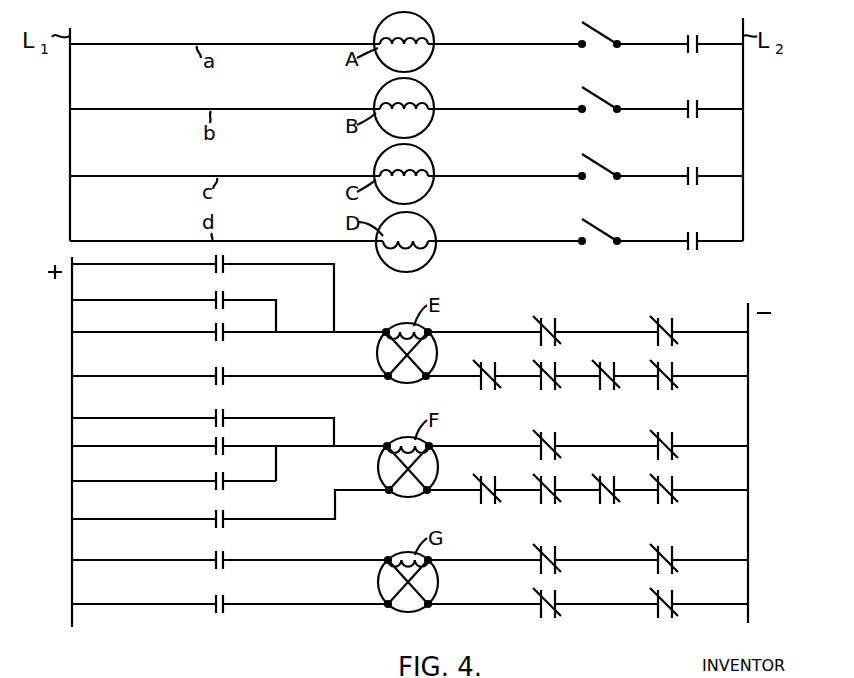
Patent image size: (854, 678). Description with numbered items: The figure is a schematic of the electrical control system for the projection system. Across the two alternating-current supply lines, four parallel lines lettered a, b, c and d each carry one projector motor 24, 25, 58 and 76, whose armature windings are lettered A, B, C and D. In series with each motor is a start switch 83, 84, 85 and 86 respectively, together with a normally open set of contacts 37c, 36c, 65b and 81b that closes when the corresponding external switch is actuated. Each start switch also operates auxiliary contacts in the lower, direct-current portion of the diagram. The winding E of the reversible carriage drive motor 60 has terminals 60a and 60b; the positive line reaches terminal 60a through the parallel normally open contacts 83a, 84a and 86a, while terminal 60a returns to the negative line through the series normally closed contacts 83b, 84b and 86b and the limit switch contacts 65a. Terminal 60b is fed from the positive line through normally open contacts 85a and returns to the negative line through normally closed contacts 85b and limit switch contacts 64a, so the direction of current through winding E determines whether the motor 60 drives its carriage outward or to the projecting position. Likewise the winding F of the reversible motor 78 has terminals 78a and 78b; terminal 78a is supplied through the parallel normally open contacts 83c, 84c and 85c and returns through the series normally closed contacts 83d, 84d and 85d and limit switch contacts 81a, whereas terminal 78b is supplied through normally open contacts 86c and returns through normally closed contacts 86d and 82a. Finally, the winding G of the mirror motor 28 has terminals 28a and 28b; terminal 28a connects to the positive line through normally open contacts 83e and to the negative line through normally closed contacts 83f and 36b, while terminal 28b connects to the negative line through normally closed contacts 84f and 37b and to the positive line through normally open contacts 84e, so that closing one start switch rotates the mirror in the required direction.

The projector motor 24 is at (433, 52).
The projector motor 25 is at (433, 118).
The projector motor 58 is at (434, 184).
The projector motor 76 is at (434, 232).
The start switch 83 is at (600, 33).
The start switch 84 is at (600, 98).
The start switch 85 is at (600, 165).
The start switch 86 is at (600, 230).
The normally open contacts 37c is at (697, 21).
The normally open contacts 36c is at (690, 100).
The normally open contacts 65b is at (690, 167).
The normally open contacts 81b is at (697, 218).
The normally open contacts 83a is at (223, 273).
The normally open contacts 84a is at (216, 293).
The normally open contacts 86a is at (226, 312).
The normally open contacts 85a is at (217, 368).
The normally open contacts 83c is at (223, 427).
The normally open contacts 84c is at (223, 456).
The normally open contacts 85c is at (223, 490).
The normally open contacts 86c is at (216, 512).
The normally open contacts 83e is at (217, 551).
The normally open contacts 84e is at (217, 596).
The reversible drive motor 60 is at (409, 383).
The terminal 60a is at (358, 330).
The terminal 60b is at (469, 330).
The reversible drive motor 78 is at (410, 497).
The terminal 78a is at (358, 444).
The terminal 78b is at (469, 444).
The mirror motor 28 is at (410, 612).
The terminal 28a is at (383, 565).
The terminal 28b is at (430, 565).
The normally closed contacts 85b is at (557, 301).
The normally closed limit switch contacts 64a is at (677, 301).
The normally closed contacts 83b is at (488, 368).
The normally closed contacts 84b is at (555, 362).
The normally closed contacts 86b is at (614, 389).
The normally closed contacts 65a is at (672, 362).
The normally closed contacts 86d is at (557, 416).
The normally closed contacts 82a is at (677, 418).
The normally closed contacts 83d is at (477, 474).
The normally closed contacts 84d is at (556, 505).
The normally closed contacts 85d is at (617, 505).
The normally closed contacts 81a is at (678, 469).
The normally closed contacts 84f is at (553, 547).
The normally closed contacts 37b is at (663, 547).
The normally closed contacts 83f is at (559, 617).
The normally closed contacts 36b is at (675, 617).